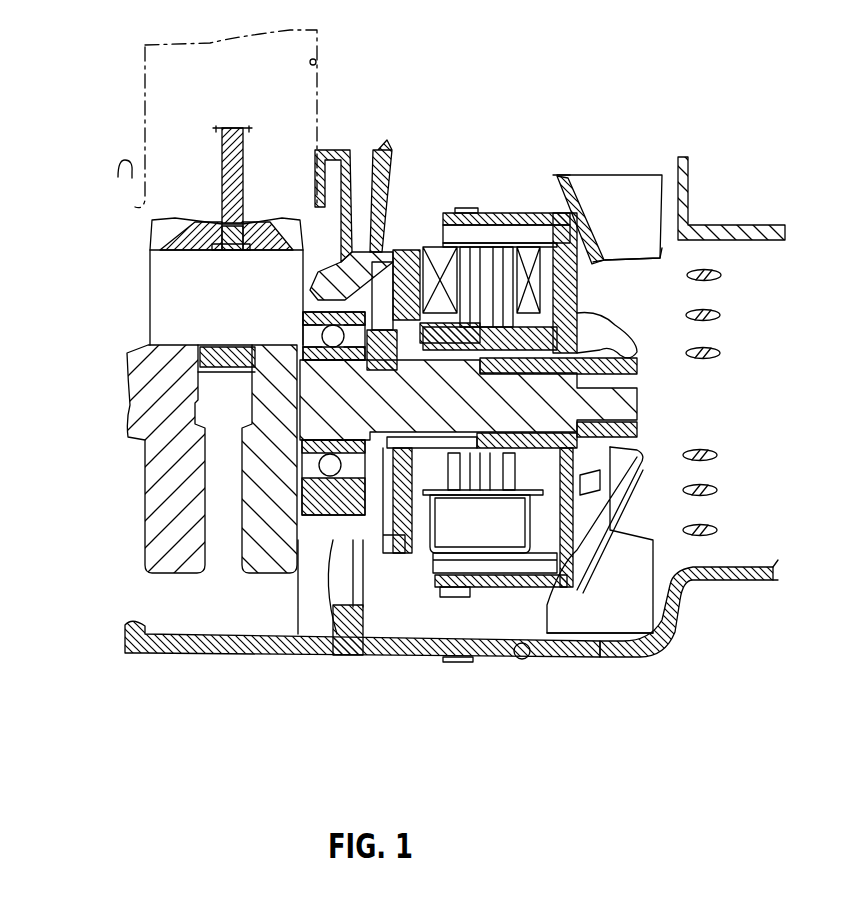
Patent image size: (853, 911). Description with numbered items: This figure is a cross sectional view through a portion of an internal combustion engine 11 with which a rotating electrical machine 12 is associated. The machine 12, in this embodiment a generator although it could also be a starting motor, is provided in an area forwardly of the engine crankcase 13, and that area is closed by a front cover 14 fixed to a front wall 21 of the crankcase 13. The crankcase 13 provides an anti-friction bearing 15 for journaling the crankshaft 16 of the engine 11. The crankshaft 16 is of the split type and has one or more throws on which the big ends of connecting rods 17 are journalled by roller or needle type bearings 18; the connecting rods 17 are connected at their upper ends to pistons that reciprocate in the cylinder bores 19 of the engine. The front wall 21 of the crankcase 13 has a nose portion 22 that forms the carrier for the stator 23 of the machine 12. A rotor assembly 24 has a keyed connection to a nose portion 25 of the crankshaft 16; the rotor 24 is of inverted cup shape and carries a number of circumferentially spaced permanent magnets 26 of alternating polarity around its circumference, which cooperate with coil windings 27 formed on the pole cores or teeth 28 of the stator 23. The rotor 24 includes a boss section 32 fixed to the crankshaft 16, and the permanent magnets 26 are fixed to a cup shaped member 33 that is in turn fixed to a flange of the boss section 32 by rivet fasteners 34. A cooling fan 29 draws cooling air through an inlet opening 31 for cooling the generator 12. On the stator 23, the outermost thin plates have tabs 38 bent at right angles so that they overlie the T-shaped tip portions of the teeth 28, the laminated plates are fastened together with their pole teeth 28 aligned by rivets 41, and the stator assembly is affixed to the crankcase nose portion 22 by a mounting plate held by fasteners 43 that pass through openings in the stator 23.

The internal combustion engine 11 is at (582, 162).
The rotating electrical machine 12 is at (530, 153).
The crankcase 13 is at (190, 611).
The front cover 14 is at (287, 656).
The anti-friction bearing 15 is at (302, 447).
The crankshaft 16 is at (150, 267).
The connecting rods 17 is at (247, 148).
The roller or needle type bearings 18 is at (228, 345).
The cylinder bores 19 is at (320, 60).
The front wall 21 is at (347, 656).
The nose portion 22 is at (398, 553).
The stator 23 is at (437, 233).
The rotor assembly 24 is at (536, 196).
The nose portion of the crankshaft 25 is at (640, 410).
The permanent magnets 26 is at (502, 565).
The coil windings 27 is at (433, 233).
The pole cores or teeth 28 is at (487, 257).
The cooling fan 29 is at (610, 640).
The inlet opening 31 is at (778, 502).
The boss section 32 is at (640, 368).
The cup shaped member 33 is at (593, 550).
The rivet fasteners 34 is at (633, 473).
The tabs 38 is at (590, 222).
The rivets 41 is at (593, 330).
The fasteners 43 is at (662, 249).